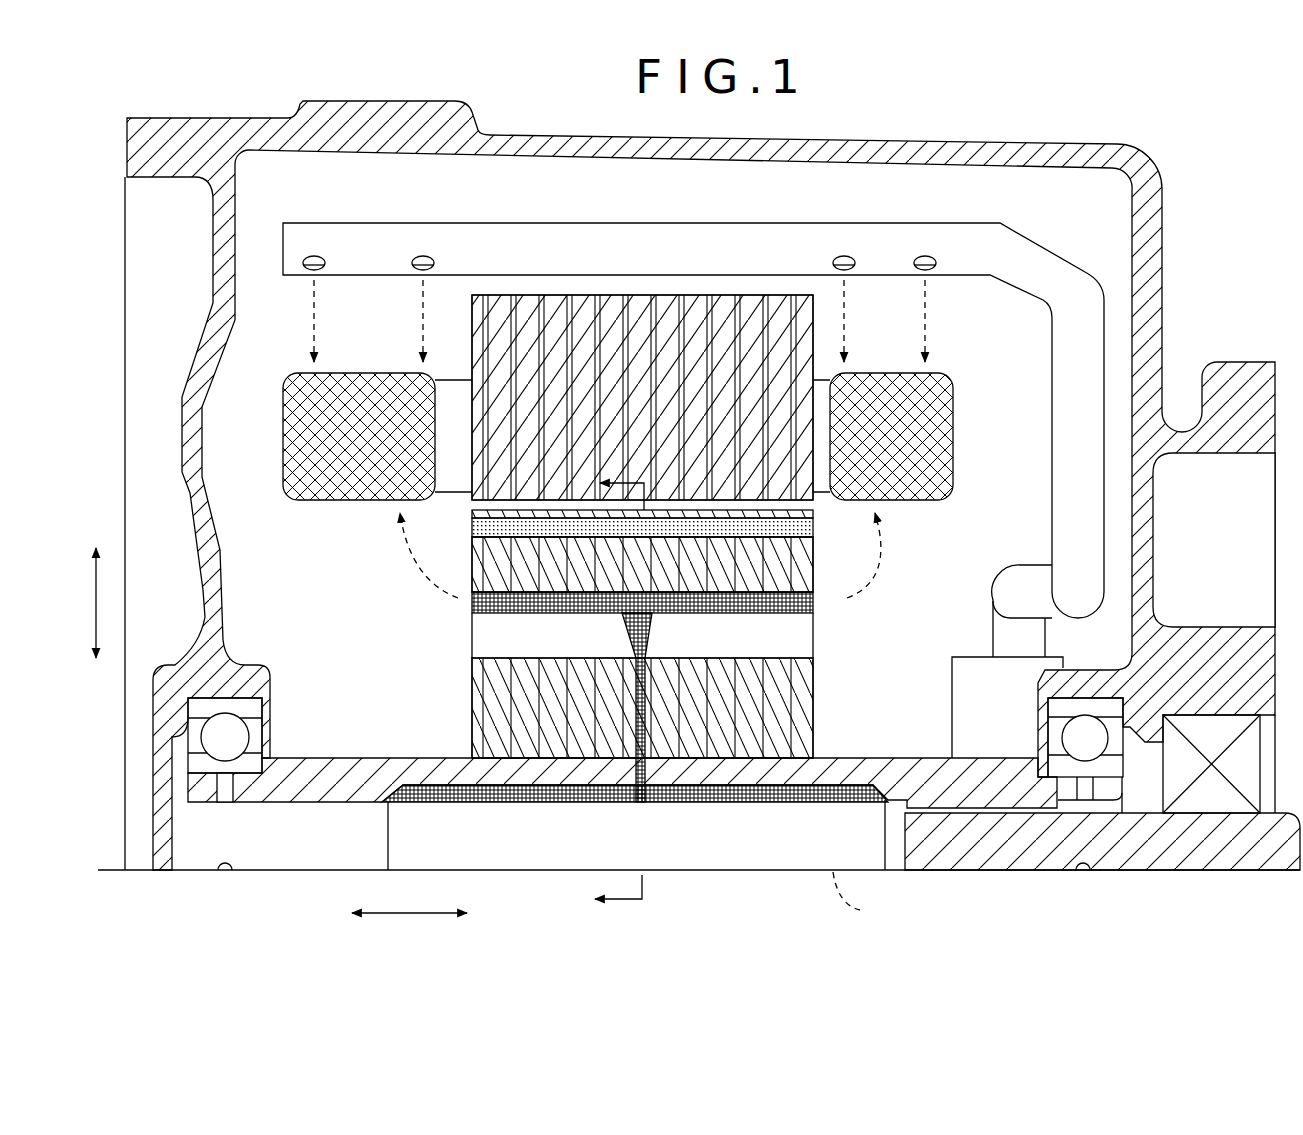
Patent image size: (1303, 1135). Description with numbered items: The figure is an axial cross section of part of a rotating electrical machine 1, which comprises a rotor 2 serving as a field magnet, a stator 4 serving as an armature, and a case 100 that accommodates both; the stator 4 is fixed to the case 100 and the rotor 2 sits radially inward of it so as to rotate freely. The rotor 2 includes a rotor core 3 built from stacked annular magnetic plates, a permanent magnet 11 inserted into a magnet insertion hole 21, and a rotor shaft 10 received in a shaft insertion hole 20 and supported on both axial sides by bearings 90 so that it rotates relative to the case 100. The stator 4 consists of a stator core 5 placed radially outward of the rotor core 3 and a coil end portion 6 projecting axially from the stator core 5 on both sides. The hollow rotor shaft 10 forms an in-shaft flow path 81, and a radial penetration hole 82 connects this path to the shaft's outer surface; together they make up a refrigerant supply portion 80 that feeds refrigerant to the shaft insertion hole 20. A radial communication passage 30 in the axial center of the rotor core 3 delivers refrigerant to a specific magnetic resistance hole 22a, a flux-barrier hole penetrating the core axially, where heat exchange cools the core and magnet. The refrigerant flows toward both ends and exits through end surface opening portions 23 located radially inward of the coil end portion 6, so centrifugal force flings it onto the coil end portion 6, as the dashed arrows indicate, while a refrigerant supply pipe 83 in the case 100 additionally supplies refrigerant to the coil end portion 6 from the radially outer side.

The rotating electrical machine 1 is at (1242, 153).
The rotor 2 is at (656, 637).
The rotor core 3 is at (812, 577).
The stator 4 is at (551, 397).
The stator core 5 is at (807, 325).
The coil end portion 6 is at (282, 420).
The rotor shaft 10 is at (867, 765).
The permanent magnet 11 is at (813, 520).
The shaft insertion hole 20 is at (490, 770).
The magnet insertion hole 21 is at (473, 527).
The specific magnetic resistance hole 22a is at (790, 613).
The end surface opening portion 23 is at (460, 645).
The radial communication passage 30 is at (652, 690).
The refrigerant supply portion 80 is at (635, 761).
The in-shaft flow path 81 is at (538, 860).
The radial penetration hole 82 is at (643, 802).
The refrigerant supply pipe 83 is at (632, 230).
The bearing 90 is at (252, 710).
The case 100 is at (852, 148).